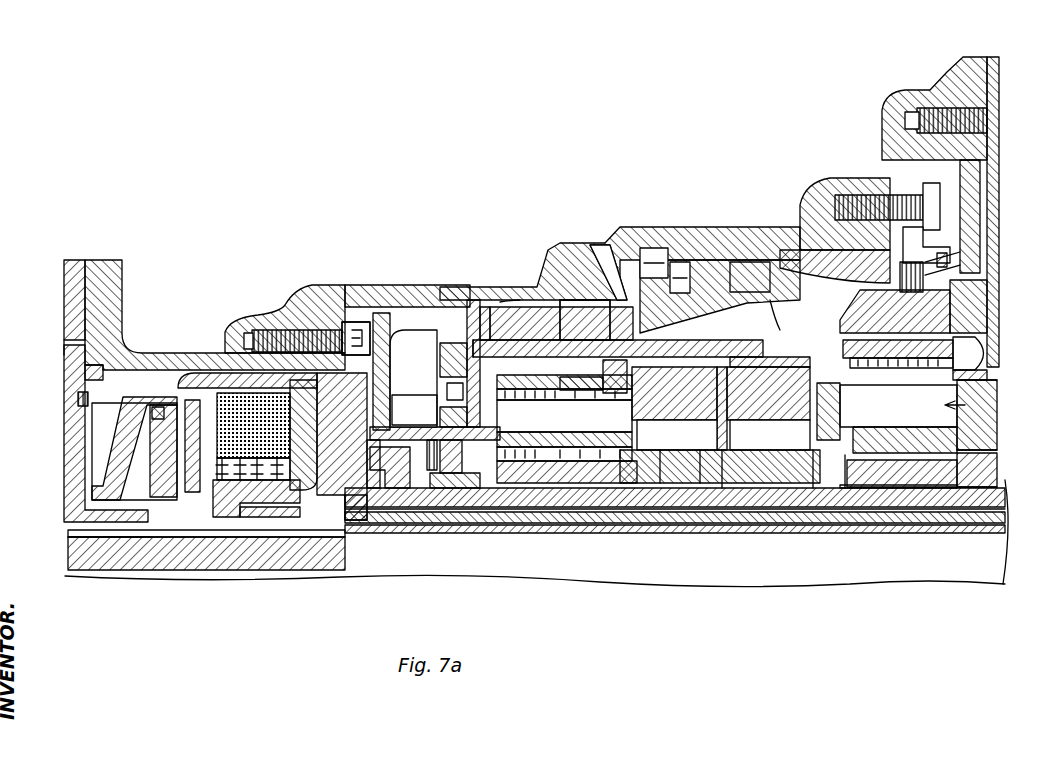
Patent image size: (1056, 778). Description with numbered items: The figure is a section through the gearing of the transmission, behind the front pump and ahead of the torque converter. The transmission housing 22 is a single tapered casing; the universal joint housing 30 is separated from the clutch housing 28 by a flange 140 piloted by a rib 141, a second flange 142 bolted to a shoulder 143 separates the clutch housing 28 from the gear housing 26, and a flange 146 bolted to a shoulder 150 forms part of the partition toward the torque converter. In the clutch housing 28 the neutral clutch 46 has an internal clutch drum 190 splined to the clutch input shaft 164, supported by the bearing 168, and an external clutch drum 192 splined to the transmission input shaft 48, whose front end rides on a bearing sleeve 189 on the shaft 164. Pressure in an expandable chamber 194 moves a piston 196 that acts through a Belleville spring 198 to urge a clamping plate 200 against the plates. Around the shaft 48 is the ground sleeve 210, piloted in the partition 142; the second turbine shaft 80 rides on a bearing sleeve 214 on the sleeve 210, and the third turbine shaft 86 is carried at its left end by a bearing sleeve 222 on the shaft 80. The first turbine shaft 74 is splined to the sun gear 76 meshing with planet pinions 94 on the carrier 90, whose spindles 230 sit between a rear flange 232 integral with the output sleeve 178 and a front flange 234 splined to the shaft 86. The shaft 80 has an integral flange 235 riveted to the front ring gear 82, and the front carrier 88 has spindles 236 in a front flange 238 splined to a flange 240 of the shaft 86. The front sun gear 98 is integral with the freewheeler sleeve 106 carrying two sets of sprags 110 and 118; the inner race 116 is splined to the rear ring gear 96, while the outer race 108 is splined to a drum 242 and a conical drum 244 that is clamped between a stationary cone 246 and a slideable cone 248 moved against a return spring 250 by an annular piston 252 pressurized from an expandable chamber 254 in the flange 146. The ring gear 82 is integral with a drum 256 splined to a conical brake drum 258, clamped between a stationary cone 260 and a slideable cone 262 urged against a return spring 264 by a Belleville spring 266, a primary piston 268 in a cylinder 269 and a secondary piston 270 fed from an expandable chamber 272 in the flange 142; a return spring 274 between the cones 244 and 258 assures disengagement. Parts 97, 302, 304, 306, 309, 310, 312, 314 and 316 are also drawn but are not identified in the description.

The transmission housing 22 is at (561, 244).
The gear housing 26 is at (650, 237).
The clutch housing 28 is at (172, 353).
The universal joint housing 30 is at (66, 300).
The neutral clutch 46 is at (111, 462).
The transmission input shaft 48 is at (360, 533).
The first turbine shaft 74 is at (957, 488).
The sun gear 76 is at (886, 455).
The second turbine shaft 80 is at (535, 510).
The front ring gear 82 is at (520, 340).
The third turbine shaft 86 is at (997, 490).
The front carrier 88 is at (479, 361).
The rear planet carrier 90 is at (997, 400).
The planet pinions 94 is at (935, 395).
The rear ring gear 96 is at (990, 353).
The bearing 97 is at (588, 380).
The front sun gear 98 is at (640, 485).
The freewheeler sleeve 106 is at (715, 487).
The outer race 108 is at (648, 368).
The rollers or sprags 110 is at (678, 490).
The inner race 116 is at (743, 418).
The rollers or sprags 118 is at (740, 487).
The flange 140 is at (66, 438).
The rib 141 is at (84, 374).
The second flange 142 is at (345, 314).
The shoulder 143 is at (312, 318).
The flange 146 is at (985, 104).
The shoulder 150 is at (985, 68).
The clutch input shaft 164 is at (160, 570).
The bearing 168 is at (110, 570).
The output sleeve 178 is at (990, 462).
The bearing sleeve 189 is at (280, 503).
The internal clutch drum 190 is at (235, 517).
The external clutch drum 192 is at (150, 410).
The expandable chamber 194 is at (137, 470).
The piston 196 is at (160, 445).
The Belleville washer or spring 198 is at (212, 398).
The clamping plate 200 is at (218, 393).
The ground sleeve 210 is at (578, 523).
The bearing sleeve 214 is at (378, 490).
The bearing sleeve 222 is at (440, 470).
The spindles 230 is at (990, 425).
The rear flange 232 is at (988, 372).
The front flange 234 is at (755, 392).
The integral flange 235 is at (428, 383).
The spindles 236 is at (668, 436).
The front flange 238 is at (448, 370).
The flange 240 is at (405, 488).
The drum 242 is at (855, 320).
The conical drum 244 is at (925, 270).
The stationary cone 246 is at (855, 275).
The slideable cone 248 is at (990, 310).
The return spring 250 is at (995, 258).
The annular piston 252 is at (980, 222).
The expandable chamber 254 is at (950, 250).
The drum 256 is at (745, 366).
The conical brake drum 258 is at (778, 330).
The stationary cone 260 is at (748, 270).
The slideable cone 262 is at (685, 262).
The return spring 264 is at (655, 248).
The Belleville washer or spring 266 is at (602, 248).
The primary piston 268 is at (560, 300).
The cylinder 269 is at (545, 300).
The secondary piston 270 is at (425, 306).
The expandable chamber 272 is at (365, 322).
The return spring 274 is at (788, 226).
The cavity 302 is at (410, 437).
The bearing 304 is at (515, 410).
The member 306 is at (478, 488).
The member 309 is at (820, 480).
The member 310 is at (848, 490).
The ring 312 is at (992, 448).
The member 314 is at (925, 487).
The plate 316 is at (840, 390).